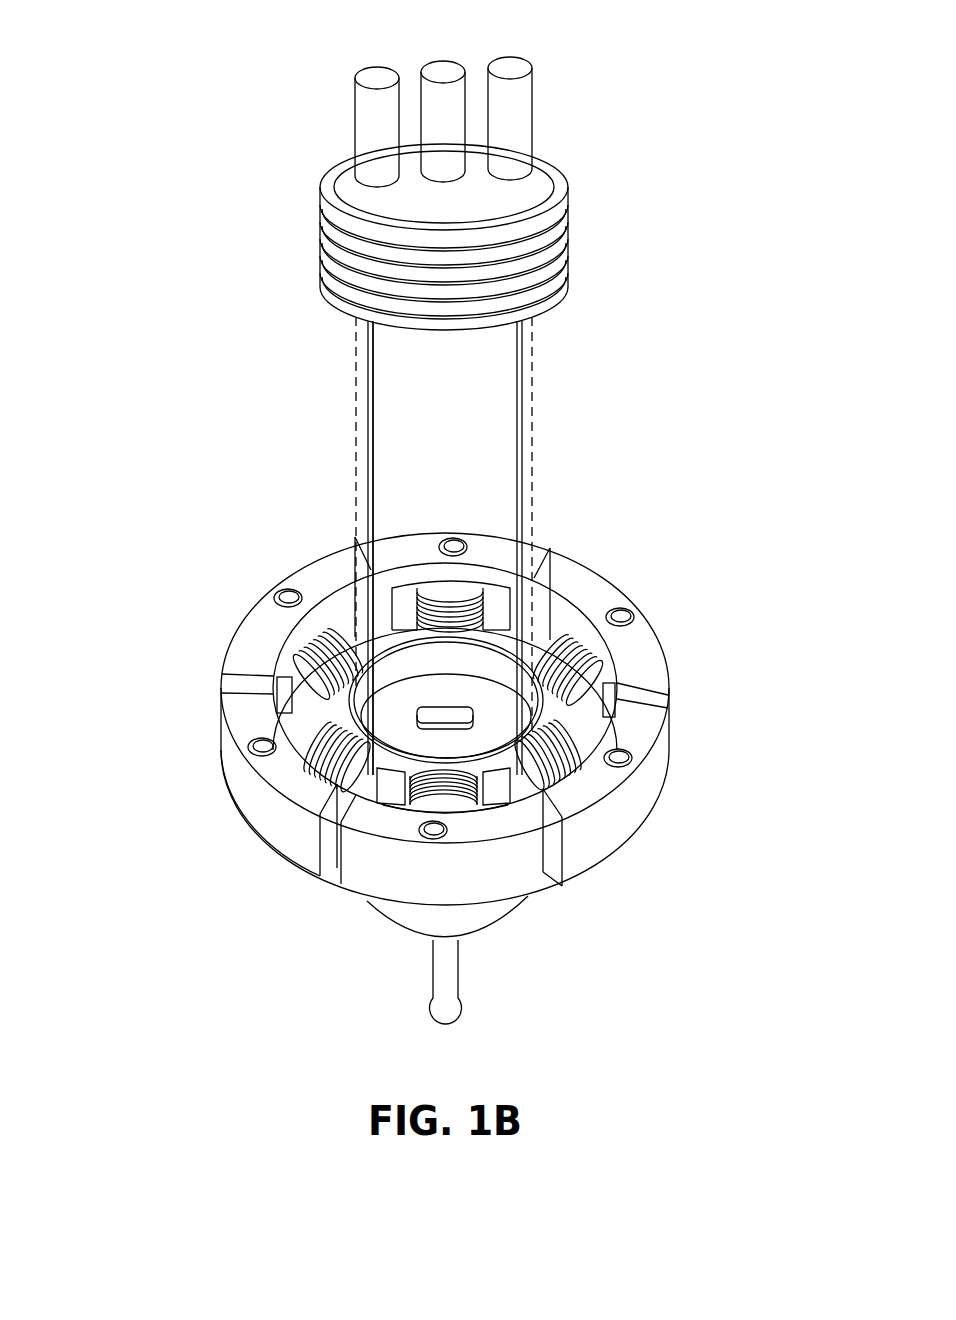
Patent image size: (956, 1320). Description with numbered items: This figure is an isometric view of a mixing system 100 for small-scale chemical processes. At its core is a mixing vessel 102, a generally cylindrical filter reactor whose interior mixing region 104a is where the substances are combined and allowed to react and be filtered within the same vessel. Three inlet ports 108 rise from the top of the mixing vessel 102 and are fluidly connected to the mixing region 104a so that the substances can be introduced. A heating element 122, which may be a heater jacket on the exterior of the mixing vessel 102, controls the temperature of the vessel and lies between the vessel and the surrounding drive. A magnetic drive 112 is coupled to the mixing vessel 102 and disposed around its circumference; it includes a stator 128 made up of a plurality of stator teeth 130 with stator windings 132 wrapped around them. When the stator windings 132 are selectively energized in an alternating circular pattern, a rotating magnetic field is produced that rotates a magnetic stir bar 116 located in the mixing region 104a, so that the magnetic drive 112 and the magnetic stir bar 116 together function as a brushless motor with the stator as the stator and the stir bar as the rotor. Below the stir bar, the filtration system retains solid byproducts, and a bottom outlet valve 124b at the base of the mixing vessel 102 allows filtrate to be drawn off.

The mixing system 100 is at (285, 32).
The inlet ports 108 is at (378, 78).
The mixing vessel 102 is at (522, 366).
The mixing region 104a is at (372, 442).
The heating element 122 is at (533, 448).
The stator windings 132 is at (333, 663).
The magnetic stir bar 116 is at (457, 712).
The stator teeth 130 is at (657, 758).
The stator 128 is at (204, 800).
The magnetic drive 112 is at (680, 815).
The bottom outlet valve 124b is at (493, 917).